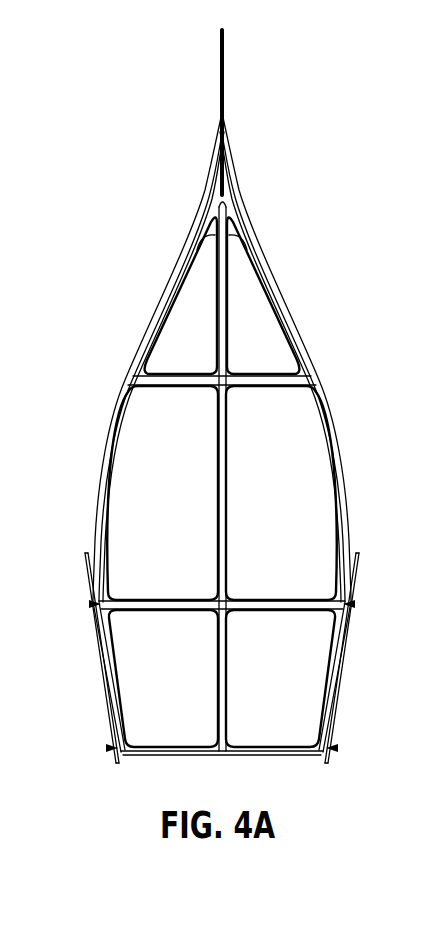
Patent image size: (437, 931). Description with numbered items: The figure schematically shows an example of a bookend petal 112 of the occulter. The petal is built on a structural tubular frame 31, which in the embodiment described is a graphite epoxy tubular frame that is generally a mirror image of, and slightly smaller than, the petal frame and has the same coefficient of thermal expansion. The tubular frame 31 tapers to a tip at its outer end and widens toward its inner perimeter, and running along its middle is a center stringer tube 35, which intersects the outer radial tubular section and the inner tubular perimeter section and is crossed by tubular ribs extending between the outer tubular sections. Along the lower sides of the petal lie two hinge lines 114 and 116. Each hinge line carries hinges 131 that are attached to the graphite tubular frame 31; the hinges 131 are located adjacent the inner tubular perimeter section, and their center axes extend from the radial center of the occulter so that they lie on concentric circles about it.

The bookend petal 112 is at (309, 289).
The tubular frame 31 is at (310, 380).
The center stringer tube 35 is at (223, 470).
The hinge line 114 is at (103, 678).
The hinge line 116 is at (342, 678).
The hinge 131 is at (92, 604).